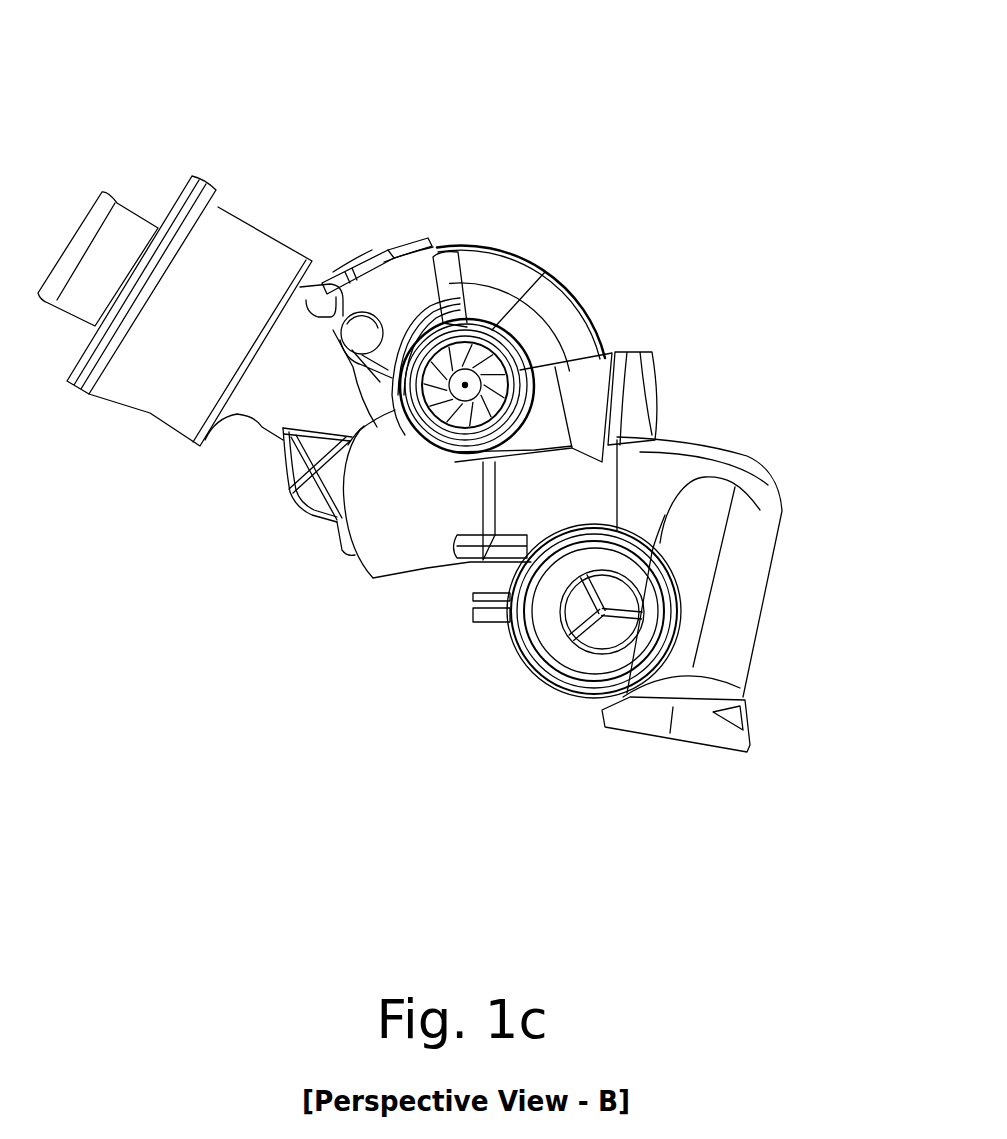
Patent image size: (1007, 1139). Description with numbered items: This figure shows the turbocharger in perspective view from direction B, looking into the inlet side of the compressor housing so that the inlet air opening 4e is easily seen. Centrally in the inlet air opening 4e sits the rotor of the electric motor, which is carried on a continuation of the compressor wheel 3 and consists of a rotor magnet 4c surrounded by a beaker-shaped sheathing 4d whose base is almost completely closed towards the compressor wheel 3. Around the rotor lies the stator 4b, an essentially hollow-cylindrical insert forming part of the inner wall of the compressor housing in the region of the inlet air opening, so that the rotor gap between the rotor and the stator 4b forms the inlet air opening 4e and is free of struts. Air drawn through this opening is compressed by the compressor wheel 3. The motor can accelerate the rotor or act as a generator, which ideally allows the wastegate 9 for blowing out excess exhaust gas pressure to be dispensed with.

The compressor wheel 3 is at (463, 372).
The stator 4b is at (452, 450).
The rotor magnet 4c is at (500, 372).
The sheathing 4d is at (482, 350).
The inlet air opening 4e is at (430, 395).
The wastegate 9 is at (587, 648).